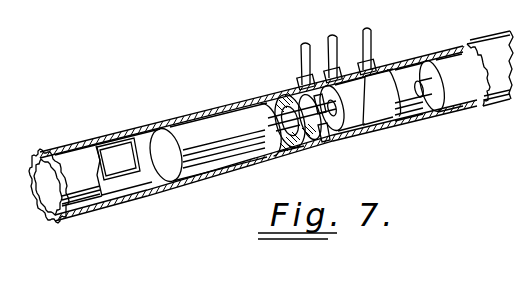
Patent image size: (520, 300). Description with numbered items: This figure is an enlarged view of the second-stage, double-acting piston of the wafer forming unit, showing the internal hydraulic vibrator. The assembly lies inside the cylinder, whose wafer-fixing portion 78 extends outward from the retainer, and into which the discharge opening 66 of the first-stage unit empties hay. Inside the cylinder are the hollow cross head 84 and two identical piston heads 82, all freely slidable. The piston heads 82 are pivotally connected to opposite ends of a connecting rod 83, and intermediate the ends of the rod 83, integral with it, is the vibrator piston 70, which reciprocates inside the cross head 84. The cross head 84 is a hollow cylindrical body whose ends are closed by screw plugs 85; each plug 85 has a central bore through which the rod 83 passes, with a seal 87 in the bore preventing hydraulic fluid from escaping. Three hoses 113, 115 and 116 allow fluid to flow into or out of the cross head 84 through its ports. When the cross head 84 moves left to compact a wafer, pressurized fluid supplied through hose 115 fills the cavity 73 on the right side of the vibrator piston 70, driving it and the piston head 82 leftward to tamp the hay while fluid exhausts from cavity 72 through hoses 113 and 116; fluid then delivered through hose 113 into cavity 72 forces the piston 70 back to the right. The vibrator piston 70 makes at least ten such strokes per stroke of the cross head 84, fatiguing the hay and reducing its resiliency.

The discharge opening 66 is at (128, 168).
The vibrator piston 70 is at (359, 128).
The cavity 72 is at (329, 141).
The cavity 73 is at (387, 120).
The wafer-fixing portion 78 is at (74, 160).
The piston head 82 is at (207, 150).
The connecting rod 83 is at (283, 106).
The cross head 84 is at (438, 110).
The screw plug 85 is at (287, 151).
The seal 87 is at (305, 142).
The hose 113 is at (316, 31).
The hose 115 is at (374, 32).
The hose 116 is at (352, 24).